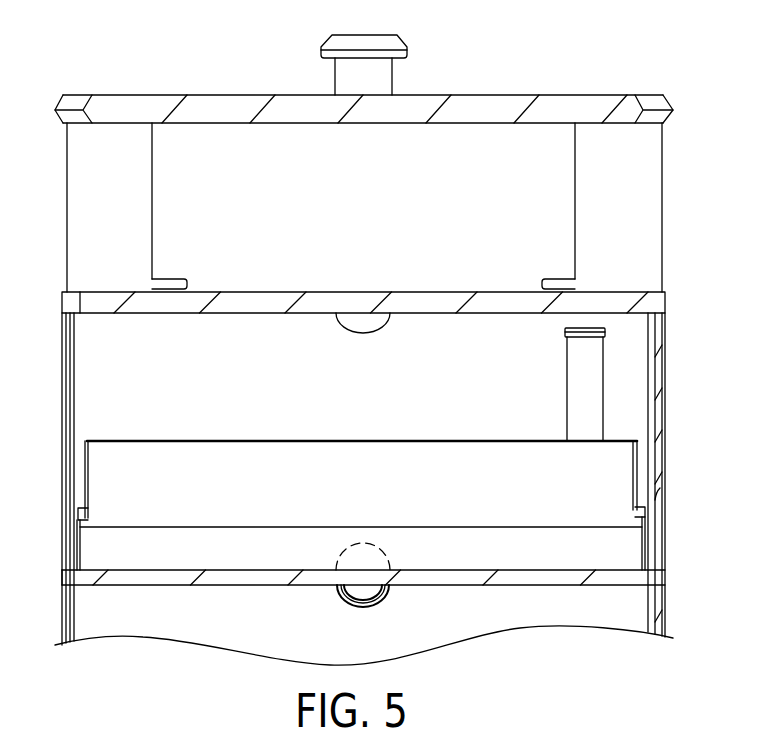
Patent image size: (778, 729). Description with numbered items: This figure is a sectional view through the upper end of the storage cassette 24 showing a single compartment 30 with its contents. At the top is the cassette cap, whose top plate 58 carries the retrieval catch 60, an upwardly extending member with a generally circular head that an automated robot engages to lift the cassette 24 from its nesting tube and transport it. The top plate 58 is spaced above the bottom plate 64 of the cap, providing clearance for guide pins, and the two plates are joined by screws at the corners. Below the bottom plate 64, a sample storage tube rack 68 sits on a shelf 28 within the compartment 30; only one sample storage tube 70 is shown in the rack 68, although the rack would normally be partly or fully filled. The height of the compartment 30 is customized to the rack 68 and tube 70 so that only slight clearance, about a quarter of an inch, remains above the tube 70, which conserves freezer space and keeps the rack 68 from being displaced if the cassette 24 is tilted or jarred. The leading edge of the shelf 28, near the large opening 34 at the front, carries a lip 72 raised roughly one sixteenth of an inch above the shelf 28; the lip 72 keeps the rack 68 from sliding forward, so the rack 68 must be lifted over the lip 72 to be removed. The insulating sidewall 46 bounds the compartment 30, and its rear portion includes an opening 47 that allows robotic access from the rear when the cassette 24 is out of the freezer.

The storage cassette 24 is at (685, 104).
The shelf 28 is at (468, 580).
The compartment 30 is at (377, 398).
The large opening 34 is at (104, 393).
The insulating sidewall 46 is at (660, 414).
The opening 47 is at (660, 492).
The top plate 58 is at (485, 103).
The retrieval catch 60 is at (370, 40).
The bottom plate 64 is at (627, 297).
The sample storage tube rack 68 is at (377, 500).
The sample storage tube 70 is at (575, 367).
The lip 72 is at (72, 573).